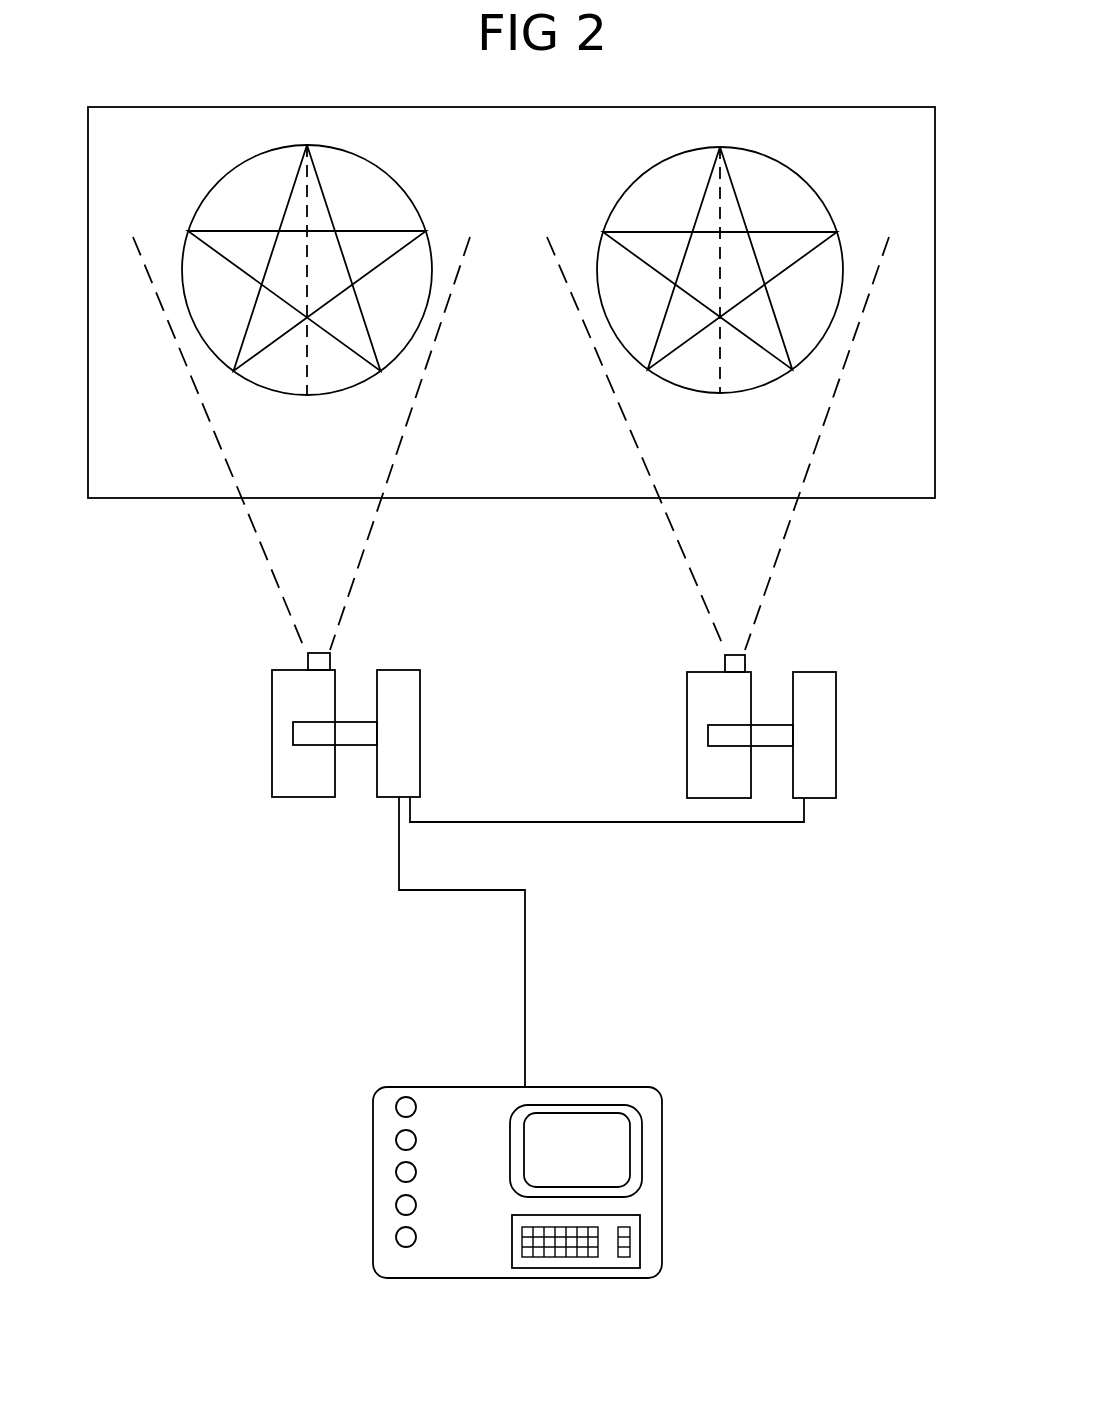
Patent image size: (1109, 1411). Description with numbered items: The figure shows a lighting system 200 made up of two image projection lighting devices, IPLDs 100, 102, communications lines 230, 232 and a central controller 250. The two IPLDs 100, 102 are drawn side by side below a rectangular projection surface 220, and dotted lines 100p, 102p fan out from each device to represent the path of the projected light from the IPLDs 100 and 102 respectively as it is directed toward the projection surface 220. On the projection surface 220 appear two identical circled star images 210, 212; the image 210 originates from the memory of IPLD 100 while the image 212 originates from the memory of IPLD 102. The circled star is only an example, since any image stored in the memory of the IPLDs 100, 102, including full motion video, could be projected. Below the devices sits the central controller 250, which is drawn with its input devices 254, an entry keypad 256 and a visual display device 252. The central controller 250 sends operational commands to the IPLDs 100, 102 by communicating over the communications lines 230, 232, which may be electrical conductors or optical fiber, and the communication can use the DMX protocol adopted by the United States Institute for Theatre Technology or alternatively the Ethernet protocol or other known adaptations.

The IPLD 100 is at (258, 748).
The IPLD 102 is at (845, 770).
The dotted lines 100p is at (413, 434).
The dotted lines 102p is at (668, 552).
The lighting system 200 is at (880, 583).
The circled star image 210 is at (195, 187).
The circled star image 212 is at (630, 172).
The projection surface 220 is at (182, 508).
The communications line 230 is at (530, 1062).
The communications line 232 is at (569, 837).
The central controller 250 is at (372, 1182).
The visual display device 252 is at (645, 1147).
The input devices 254 is at (432, 1162).
The entry keypad 256 is at (645, 1242).